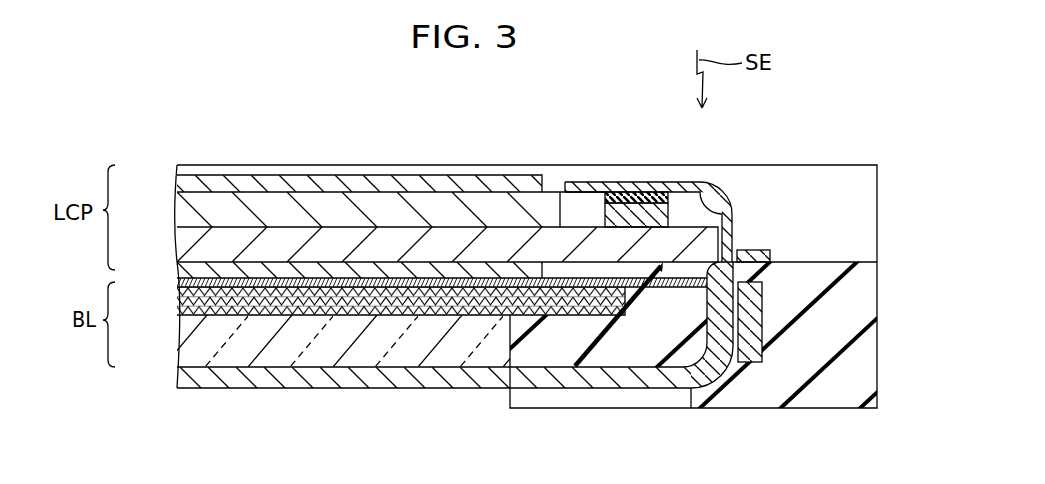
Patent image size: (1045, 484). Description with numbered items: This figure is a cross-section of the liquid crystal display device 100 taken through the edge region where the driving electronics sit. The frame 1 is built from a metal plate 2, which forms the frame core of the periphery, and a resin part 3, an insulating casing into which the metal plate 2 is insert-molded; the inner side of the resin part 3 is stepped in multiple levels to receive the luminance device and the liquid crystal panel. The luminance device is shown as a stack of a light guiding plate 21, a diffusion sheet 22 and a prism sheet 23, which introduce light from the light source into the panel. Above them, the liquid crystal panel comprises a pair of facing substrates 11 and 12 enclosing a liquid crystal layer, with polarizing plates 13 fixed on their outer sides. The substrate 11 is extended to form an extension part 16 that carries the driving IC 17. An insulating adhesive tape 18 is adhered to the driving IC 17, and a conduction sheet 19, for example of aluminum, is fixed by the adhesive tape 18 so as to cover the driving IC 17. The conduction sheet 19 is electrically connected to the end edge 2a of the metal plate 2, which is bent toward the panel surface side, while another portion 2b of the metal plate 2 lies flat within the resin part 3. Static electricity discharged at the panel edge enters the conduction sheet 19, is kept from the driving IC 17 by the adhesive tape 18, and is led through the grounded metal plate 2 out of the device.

The liquid crystal display device 100 is at (806, 82).
The frame 1 is at (891, 268).
The metal plate 2 is at (430, 390).
The end edge 2a is at (760, 252).
The flat portion of frame 2b is at (310, 390).
The resin part 3 is at (815, 397).
The substrate 11 is at (177, 243).
The substrate 12 is at (177, 213).
The polarizing plate 13 is at (177, 185).
The extension part 16 is at (647, 284).
The driving IC 17 is at (668, 215).
The adhesive tape 18 is at (658, 192).
The conduction sheet 19 is at (600, 190).
The light guiding plate 21 is at (177, 341).
The diffusion sheet 22 is at (177, 303).
The prism sheet 23 is at (177, 283).